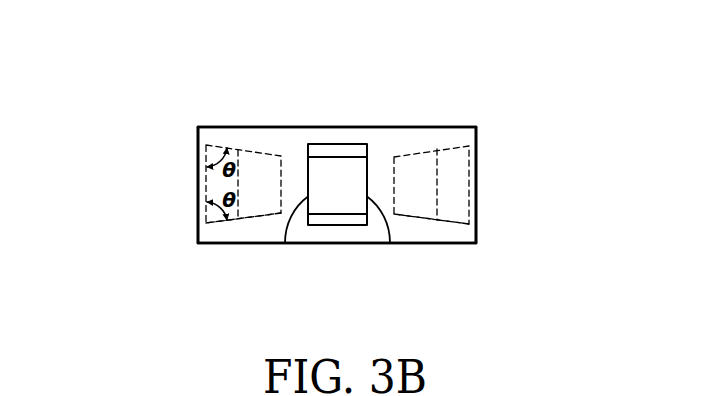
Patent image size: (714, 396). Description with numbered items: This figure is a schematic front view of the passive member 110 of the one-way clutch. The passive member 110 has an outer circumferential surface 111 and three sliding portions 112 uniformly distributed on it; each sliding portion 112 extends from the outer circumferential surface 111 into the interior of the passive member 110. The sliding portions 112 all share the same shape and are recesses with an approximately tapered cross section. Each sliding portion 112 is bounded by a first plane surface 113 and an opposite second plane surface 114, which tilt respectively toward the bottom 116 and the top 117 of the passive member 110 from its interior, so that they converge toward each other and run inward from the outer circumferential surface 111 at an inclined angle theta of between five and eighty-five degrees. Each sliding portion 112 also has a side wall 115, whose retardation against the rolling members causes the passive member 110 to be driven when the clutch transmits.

The passive member 110 is at (182, 97).
The outer circumferential surface 111 is at (198, 168).
The sliding portion 112 is at (352, 178).
The first plane surface 113 is at (270, 220).
The second plane surface 114 is at (270, 155).
The side wall 115 is at (286, 243).
The bottom 116 is at (455, 243).
The top 117 is at (455, 127).